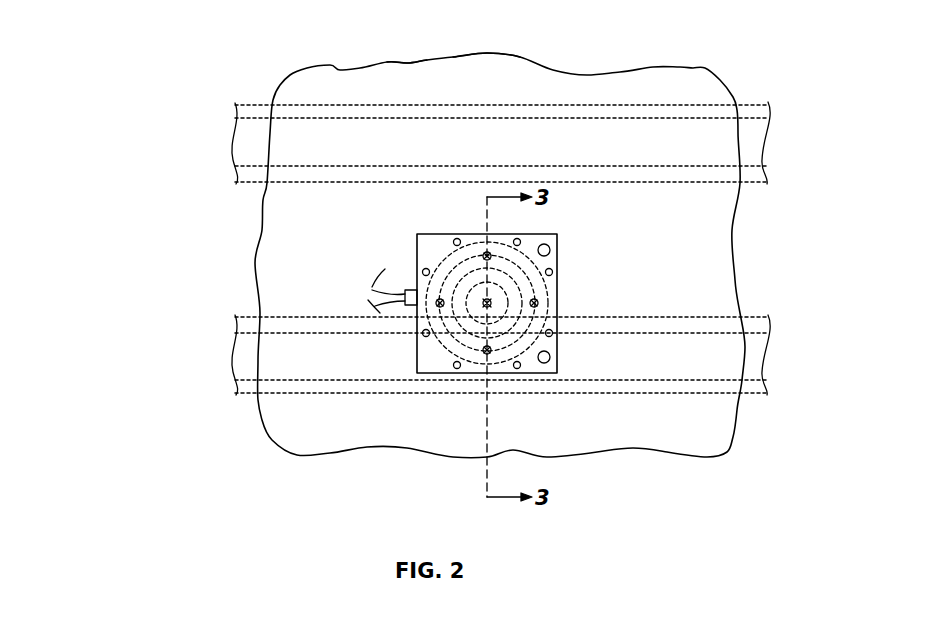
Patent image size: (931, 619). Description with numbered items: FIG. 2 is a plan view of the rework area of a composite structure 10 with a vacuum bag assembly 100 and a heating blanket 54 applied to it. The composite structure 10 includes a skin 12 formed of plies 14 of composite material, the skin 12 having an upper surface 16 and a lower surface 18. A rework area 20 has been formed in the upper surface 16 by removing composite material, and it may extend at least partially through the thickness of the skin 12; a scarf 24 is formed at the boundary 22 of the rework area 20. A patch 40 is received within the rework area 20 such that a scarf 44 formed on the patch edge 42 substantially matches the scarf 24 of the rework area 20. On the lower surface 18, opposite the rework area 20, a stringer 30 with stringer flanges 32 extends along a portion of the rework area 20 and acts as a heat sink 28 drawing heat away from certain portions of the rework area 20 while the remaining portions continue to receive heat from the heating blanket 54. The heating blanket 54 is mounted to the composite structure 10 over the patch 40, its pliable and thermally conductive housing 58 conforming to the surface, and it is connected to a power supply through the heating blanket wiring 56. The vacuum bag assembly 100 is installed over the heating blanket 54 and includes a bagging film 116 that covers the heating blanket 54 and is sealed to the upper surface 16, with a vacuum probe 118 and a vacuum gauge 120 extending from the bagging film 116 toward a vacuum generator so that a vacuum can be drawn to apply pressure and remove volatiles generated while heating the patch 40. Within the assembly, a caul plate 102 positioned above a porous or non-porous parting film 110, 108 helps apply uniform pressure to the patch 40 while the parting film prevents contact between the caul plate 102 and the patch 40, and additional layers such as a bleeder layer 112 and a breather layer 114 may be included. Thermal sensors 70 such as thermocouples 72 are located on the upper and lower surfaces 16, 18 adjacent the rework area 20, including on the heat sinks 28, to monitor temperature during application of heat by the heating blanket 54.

The composite structure 10 is at (702, 68).
The skin 12 is at (645, 80).
The plies 14 is at (500, 255).
The upper surface 16 is at (503, 72).
The lower surface 18 is at (413, 75).
The rework area 20 is at (630, 303).
The scarf 24 is at (547, 304).
The boundary 22 is at (544, 365).
The heat sinks 28 is at (552, 248).
The stringer 30 is at (762, 163).
The stringer flanges 32 is at (772, 336).
The patch 40 is at (650, 298).
The patch edge 42 is at (650, 298).
The scarf 44 is at (523, 268).
The heating blanket 54 is at (289, 314).
The housing 58 is at (425, 347).
The heating blanket wiring 56 is at (370, 290).
The thermal sensors 70 is at (675, 217).
The thermocouples 72 is at (517, 242).
The vacuum bag assembly 100 is at (417, 372).
The caul plate 102 is at (295, 293).
The non-porous parting film 108 is at (295, 293).
The porous parting film 110 is at (428, 242).
The bleeder layer 112 is at (315, 275).
The breather layer 114 is at (315, 275).
The bagging film 116 is at (431, 236).
The vacuum probe 118 is at (547, 354).
The vacuum gauge 120 is at (550, 250).